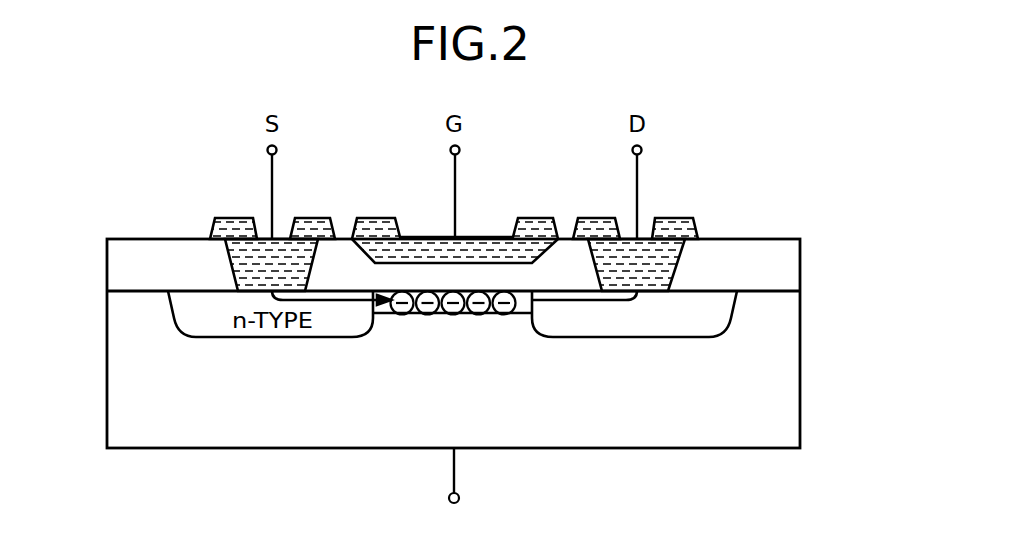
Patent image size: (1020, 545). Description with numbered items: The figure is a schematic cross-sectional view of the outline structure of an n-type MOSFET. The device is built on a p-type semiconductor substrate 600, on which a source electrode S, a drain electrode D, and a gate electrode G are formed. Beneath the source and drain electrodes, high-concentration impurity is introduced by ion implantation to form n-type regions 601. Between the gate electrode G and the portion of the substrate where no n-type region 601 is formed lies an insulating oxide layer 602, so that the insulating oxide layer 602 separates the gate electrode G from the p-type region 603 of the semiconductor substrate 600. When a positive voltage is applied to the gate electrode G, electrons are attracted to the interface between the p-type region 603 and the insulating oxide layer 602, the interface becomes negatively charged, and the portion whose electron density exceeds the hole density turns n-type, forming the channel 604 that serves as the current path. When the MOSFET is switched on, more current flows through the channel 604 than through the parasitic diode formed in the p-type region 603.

The p-type semiconductor substrate 600 is at (800, 348).
The n-type region 601 is at (717, 318).
The insulating oxide layer 602 is at (346, 250).
The p-type region 603 is at (283, 435).
The channel 604 is at (387, 315).